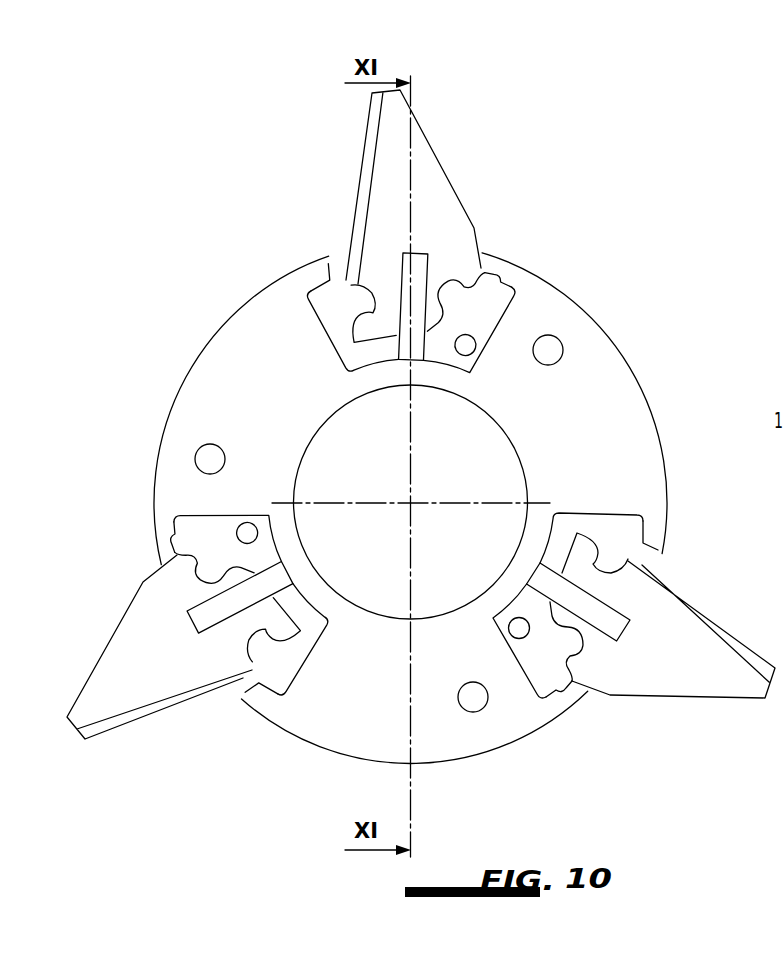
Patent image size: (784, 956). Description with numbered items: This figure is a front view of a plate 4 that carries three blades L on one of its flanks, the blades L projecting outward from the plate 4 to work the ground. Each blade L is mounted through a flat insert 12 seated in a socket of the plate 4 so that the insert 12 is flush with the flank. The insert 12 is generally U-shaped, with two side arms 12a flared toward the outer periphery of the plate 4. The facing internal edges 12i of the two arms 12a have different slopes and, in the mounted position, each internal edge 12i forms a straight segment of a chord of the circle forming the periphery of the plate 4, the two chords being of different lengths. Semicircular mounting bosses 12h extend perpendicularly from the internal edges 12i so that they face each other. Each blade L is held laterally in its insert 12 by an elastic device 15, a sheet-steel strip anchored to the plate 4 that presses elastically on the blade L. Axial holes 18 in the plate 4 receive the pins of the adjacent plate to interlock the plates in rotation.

The plate 4 is at (553, 312).
The flat insert 12 is at (326, 349).
The side arm 12a is at (308, 284).
The mounting boss 12h is at (345, 250).
The internal edge 12i is at (353, 315).
The elastic device 15 is at (417, 268).
The axial hole 18 is at (553, 346).
The blade L is at (383, 177).